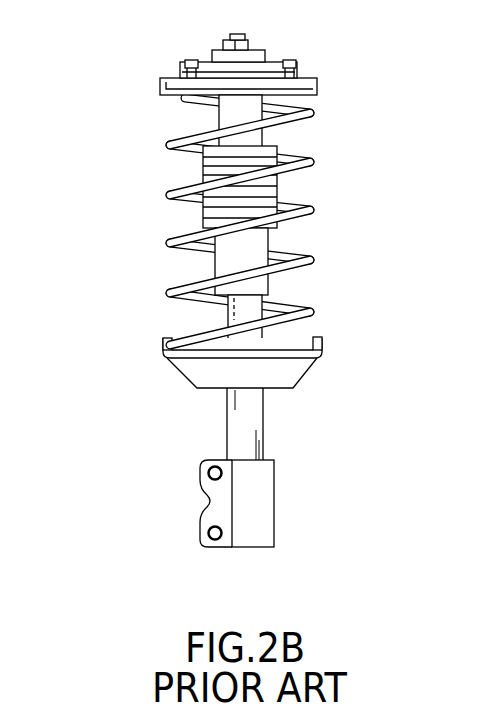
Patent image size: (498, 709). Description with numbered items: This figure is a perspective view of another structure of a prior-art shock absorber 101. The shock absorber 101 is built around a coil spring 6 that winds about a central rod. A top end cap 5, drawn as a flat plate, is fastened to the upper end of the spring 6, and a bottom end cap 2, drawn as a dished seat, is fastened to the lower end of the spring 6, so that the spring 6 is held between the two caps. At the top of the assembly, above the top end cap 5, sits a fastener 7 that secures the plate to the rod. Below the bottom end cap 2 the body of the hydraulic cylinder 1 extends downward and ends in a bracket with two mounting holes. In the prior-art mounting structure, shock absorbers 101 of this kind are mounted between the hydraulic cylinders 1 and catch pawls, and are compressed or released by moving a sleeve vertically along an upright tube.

The hydraulic cylinder 1 is at (250, 427).
The bottom end cap 2 is at (322, 350).
The top end cap 5 is at (318, 80).
The spring 6 is at (310, 162).
The mounting nut 7 is at (258, 44).
The shock absorber 101 is at (158, 262).